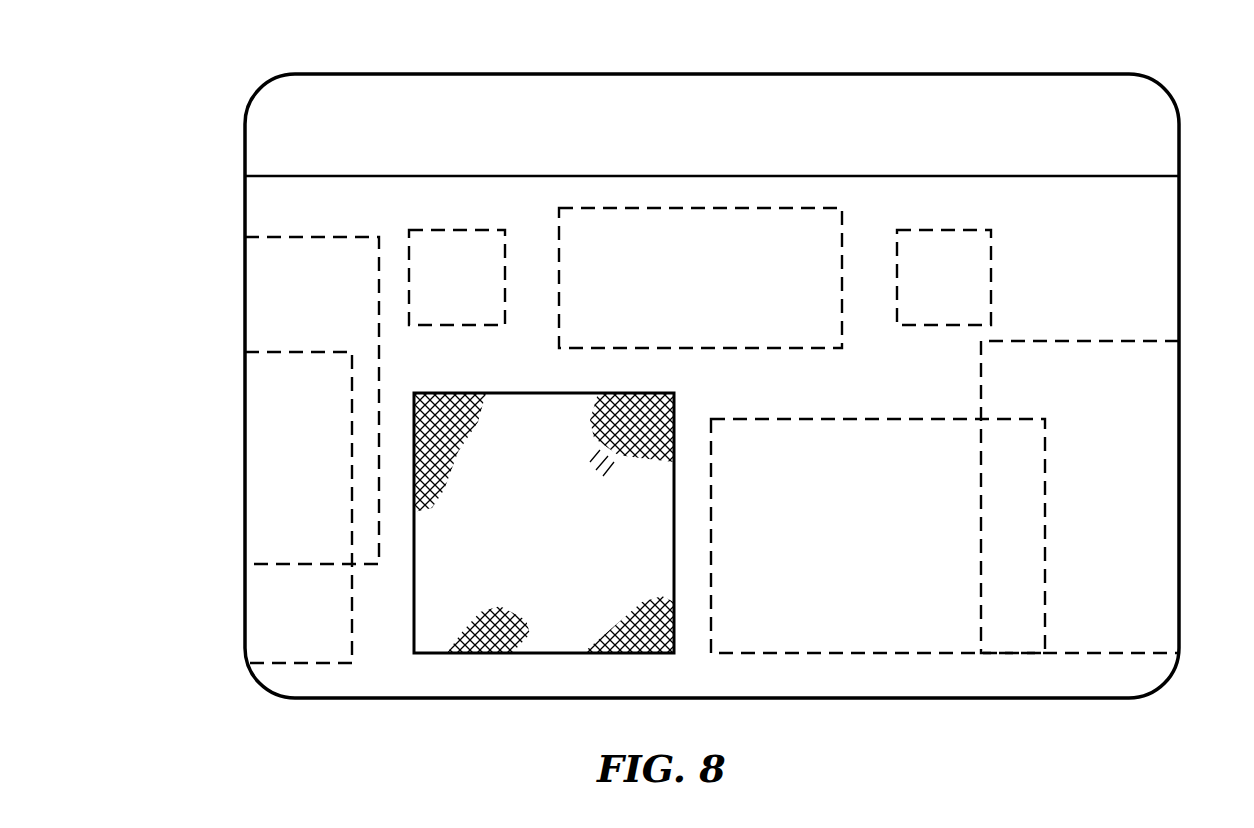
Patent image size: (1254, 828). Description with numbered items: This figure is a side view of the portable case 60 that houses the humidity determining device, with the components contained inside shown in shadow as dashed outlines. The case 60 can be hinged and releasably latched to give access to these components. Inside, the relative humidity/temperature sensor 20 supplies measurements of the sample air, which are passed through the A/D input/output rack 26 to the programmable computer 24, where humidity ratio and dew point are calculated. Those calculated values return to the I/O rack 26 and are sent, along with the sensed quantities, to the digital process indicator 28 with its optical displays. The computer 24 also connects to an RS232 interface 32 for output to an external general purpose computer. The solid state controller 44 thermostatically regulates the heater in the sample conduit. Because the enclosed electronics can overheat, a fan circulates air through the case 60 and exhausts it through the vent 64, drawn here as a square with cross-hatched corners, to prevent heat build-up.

The case 60 is at (747, 74).
The relative humidity/temperature sensor 20 is at (258, 282).
The programmable computer 24 is at (268, 617).
The solid state controller 44 is at (429, 234).
The digital process indicator 28 is at (807, 216).
The A/D input/output rack 26 is at (1134, 603).
The RS232 interface 32 is at (892, 628).
The vent 64 is at (506, 645).